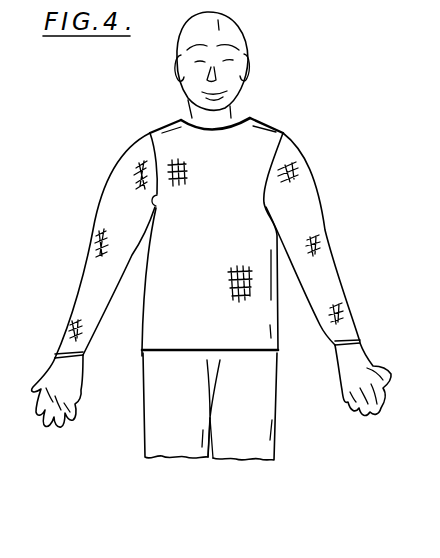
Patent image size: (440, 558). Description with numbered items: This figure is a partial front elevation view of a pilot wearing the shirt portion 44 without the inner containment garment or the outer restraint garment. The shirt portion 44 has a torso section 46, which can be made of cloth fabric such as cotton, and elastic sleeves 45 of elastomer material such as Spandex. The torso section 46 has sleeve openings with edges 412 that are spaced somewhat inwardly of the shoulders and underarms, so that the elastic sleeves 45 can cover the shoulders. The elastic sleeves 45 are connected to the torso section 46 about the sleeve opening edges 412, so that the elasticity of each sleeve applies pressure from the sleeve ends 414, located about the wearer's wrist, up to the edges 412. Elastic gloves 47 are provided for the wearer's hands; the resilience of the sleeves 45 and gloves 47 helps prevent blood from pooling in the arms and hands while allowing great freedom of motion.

The shirt portion 44 is at (233, 215).
The elastic sleeves 45 is at (100, 199).
The torso section 46 is at (247, 267).
The elastic gloves 47 is at (80, 400).
The sleeve opening edges 412 is at (160, 207).
The sleeve ends 414 is at (56, 355).